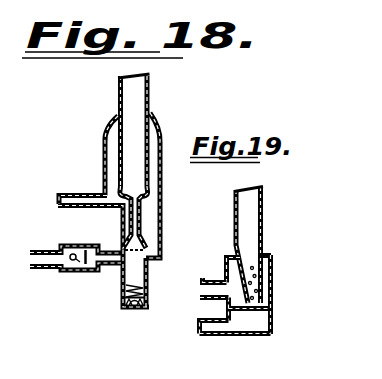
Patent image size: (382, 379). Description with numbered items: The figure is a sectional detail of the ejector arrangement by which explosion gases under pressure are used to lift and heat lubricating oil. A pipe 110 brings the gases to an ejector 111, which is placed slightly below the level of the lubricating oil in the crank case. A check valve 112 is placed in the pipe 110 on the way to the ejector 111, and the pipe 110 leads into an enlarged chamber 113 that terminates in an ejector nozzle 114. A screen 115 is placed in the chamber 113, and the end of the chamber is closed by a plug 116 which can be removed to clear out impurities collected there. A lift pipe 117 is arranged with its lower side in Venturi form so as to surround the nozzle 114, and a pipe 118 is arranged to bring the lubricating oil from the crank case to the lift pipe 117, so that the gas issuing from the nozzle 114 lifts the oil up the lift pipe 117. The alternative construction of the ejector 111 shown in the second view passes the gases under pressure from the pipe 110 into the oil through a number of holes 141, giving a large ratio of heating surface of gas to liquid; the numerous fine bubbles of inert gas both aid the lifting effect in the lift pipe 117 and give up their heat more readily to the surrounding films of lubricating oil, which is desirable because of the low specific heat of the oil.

In FIG. 19, the pipe 110 is at (205, 283).
In FIG. 18, the ejector 111 is at (164, 173).
In FIG. 19, the ejector 111 is at (273, 285).
In FIG. 18, the check valve 112 is at (76, 265).
In FIG. 18, the enlarged chamber 113 is at (142, 280).
In FIG. 18, the ejector nozzle 114 is at (141, 206).
In FIG. 18, the screen 115 is at (126, 245).
In FIG. 18, the plug 116 is at (135, 308).
In FIG. 18, the lift pipe 117 is at (117, 95).
In FIG. 19, the lift pipe 117 is at (270, 191).
In FIG. 18, the pipe 118 is at (63, 192).
In FIG. 19, the pipe 118 is at (211, 331).
In FIG. 19, the holes 141 is at (262, 258).